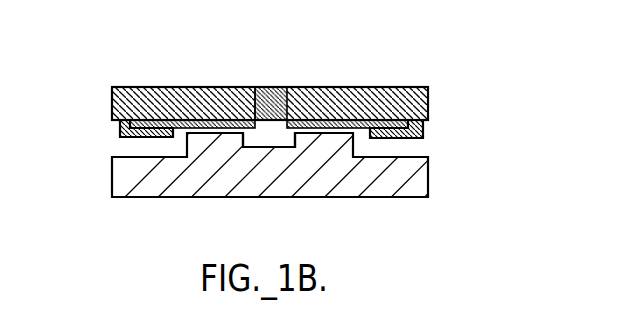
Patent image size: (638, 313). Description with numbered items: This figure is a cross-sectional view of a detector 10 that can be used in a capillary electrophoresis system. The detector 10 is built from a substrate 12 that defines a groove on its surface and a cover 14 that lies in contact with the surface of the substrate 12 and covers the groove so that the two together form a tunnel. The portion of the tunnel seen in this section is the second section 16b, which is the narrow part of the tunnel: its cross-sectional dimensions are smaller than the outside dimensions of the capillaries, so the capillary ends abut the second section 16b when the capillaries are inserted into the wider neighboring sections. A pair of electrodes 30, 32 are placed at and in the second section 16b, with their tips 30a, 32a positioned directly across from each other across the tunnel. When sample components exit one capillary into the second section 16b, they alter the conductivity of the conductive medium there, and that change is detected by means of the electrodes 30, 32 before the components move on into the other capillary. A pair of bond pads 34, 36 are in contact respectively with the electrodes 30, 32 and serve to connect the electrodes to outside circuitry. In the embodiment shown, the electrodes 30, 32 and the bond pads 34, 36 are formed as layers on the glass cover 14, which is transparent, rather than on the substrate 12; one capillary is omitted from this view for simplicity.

The detector 10 is at (503, 62).
The substrate 12 is at (428, 176).
The cover 14 is at (393, 87).
The second section 16b is at (273, 140).
The electrode 30 is at (153, 113).
The tip of electrode 30a is at (256, 87).
The electrode 32 is at (402, 118).
The tip of electrode 32a is at (288, 100).
The bond pad 34 is at (120, 124).
The bond pad 36 is at (423, 134).